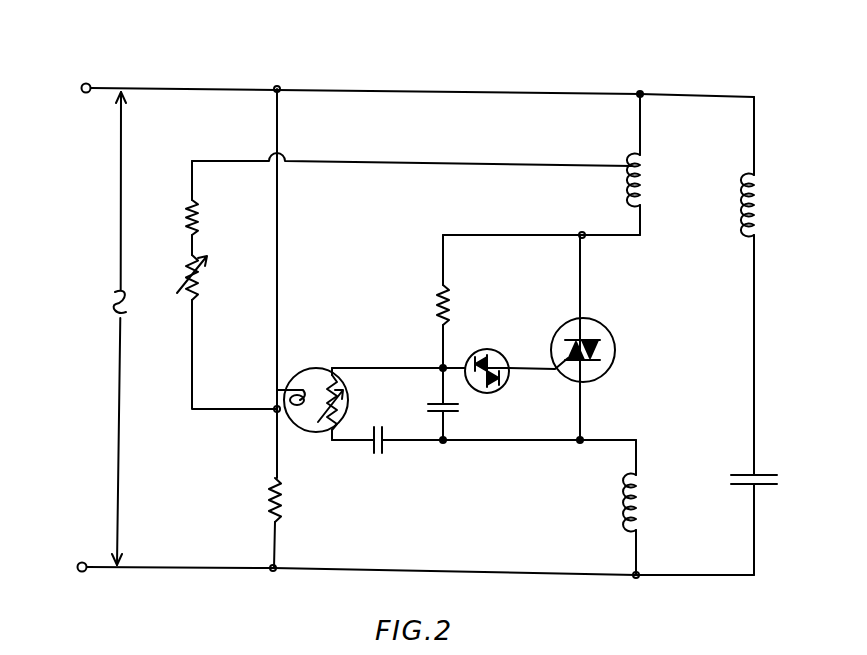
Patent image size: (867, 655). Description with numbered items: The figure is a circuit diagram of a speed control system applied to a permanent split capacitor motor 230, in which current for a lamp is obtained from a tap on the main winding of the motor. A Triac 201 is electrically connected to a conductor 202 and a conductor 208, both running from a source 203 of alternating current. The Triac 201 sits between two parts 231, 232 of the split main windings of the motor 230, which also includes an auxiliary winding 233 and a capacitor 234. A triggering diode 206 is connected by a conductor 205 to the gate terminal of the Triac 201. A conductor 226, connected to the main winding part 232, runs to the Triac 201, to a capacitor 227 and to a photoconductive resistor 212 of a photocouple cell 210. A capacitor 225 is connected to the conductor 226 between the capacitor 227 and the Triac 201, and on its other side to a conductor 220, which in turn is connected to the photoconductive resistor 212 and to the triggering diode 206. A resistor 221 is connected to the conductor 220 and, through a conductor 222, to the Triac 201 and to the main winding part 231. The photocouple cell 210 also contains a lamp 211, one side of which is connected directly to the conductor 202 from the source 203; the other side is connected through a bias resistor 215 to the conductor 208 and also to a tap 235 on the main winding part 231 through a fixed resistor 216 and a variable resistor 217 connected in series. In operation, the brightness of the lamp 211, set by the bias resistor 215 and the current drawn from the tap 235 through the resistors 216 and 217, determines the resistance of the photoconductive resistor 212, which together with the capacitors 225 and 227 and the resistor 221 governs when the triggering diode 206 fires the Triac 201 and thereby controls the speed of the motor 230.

The Triac 201 is at (612, 334).
The conductor 202 is at (205, 88).
The source of alternating current 203 is at (106, 332).
The conductor 205 is at (520, 372).
The triggering diode 206 is at (518, 334).
The conductor 208 is at (213, 569).
The photocouple cell 210 is at (305, 372).
The lamp 211 is at (306, 412).
The photoconductive resistor 212 is at (338, 426).
The bias resistor 215 is at (266, 500).
The fixed resistor 216 is at (198, 216).
The variable resistor 217 is at (200, 286).
The conductor 220 is at (378, 357).
The resistor 221 is at (450, 303).
The conductor 222 is at (553, 209).
The capacitor 225 is at (428, 409).
The conductor 226 is at (490, 443).
The capacitor 227 is at (388, 450).
The permanent split capacitor motor 230 is at (782, 64).
The part of main winding 231 is at (650, 186).
The part of main winding 232 is at (648, 496).
The auxiliary winding 233 is at (762, 206).
The capacitor 234 is at (765, 476).
The tap 235 is at (618, 171).